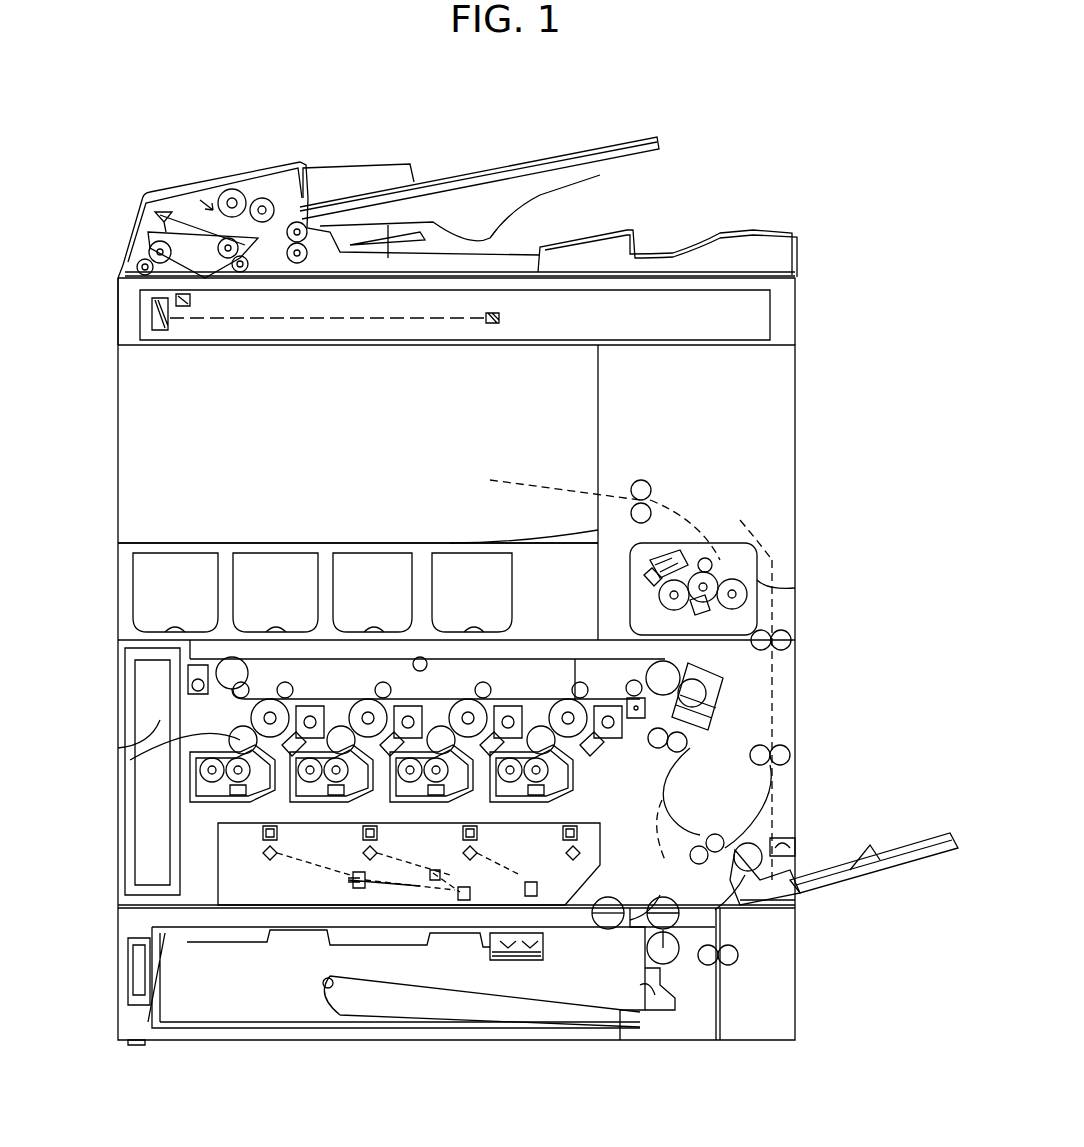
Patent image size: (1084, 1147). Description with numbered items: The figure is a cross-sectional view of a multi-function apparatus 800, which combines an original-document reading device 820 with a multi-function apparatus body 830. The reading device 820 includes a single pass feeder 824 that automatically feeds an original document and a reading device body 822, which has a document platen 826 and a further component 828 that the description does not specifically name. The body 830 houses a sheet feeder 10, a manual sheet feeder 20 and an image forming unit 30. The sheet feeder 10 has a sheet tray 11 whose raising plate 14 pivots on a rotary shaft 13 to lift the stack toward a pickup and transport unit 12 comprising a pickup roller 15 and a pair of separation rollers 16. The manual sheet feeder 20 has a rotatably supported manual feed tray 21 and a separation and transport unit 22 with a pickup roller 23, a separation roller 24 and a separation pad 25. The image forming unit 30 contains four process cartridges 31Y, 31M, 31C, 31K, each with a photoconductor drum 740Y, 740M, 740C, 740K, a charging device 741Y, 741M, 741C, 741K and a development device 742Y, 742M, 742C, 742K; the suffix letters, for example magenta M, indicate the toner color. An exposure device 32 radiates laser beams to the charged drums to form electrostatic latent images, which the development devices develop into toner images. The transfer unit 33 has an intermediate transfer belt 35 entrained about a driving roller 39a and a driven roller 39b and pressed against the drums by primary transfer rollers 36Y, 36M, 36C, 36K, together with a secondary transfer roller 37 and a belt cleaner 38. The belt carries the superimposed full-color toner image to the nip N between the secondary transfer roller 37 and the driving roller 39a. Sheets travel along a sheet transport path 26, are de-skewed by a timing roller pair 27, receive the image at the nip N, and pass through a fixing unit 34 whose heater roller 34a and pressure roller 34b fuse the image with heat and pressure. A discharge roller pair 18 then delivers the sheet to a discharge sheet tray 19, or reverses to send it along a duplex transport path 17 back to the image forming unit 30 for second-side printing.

The multi-function apparatus 800 is at (795, 205).
The sheet feeder 10 is at (830, 975).
The sheet tray 11 is at (655, 1023).
The pickup and transport unit 12 is at (688, 968).
The rotary shaft 13 is at (325, 990).
The raising plate 14 is at (528, 960).
The pickup roller 15 is at (612, 900).
The pair of separation rollers 16 is at (665, 900).
The duplex transport path 17 is at (790, 540).
The discharge roller pair 18 is at (645, 480).
The discharge sheet tray 19 is at (313, 542).
The manual sheet feeder 20 is at (870, 762).
The manual feed tray 21 is at (898, 838).
The separation and transport unit 22 is at (810, 851).
The pickup roller 23 is at (812, 840).
The separation roller 24 is at (790, 812).
The separation pad 25 is at (775, 900).
The sheet transport path 26 is at (668, 805).
The timing roller pair 27 is at (686, 752).
The image forming unit 30 is at (160, 718).
The process cartridge 31Y is at (330, 879).
The process cartridge 31M is at (372, 830).
The process cartridge 31C is at (455, 830).
The process cartridge 31K is at (550, 830).
The exposure device 32 is at (218, 862).
The transfer unit 33 is at (540, 660).
The fixing unit 34 is at (760, 563).
The heater roller 34a is at (715, 580).
The pressure roller 34b is at (747, 594).
The intermediate transfer belt 35 is at (575, 659).
The primary transfer roller 36Y is at (285, 682).
The primary transfer roller 36M is at (383, 682).
The primary transfer roller 36C is at (483, 682).
The primary transfer roller 36K is at (672, 744).
The secondary transfer roller 37 is at (706, 693).
The belt cleaner 38 is at (195, 665).
The driving roller 39a is at (678, 672).
The driven roller 39b is at (236, 660).
The photoconductor drum 740Y is at (243, 726).
The photoconductor drum 740M is at (368, 699).
The photoconductor drum 740C is at (468, 699).
The photoconductor drum 740K is at (568, 699).
The charging device 741Y is at (306, 850).
The charging device 741M is at (406, 850).
The charging device 741C is at (502, 850).
The charging device 741K is at (578, 845).
The development device 742Y is at (258, 800).
The development device 742M is at (358, 800).
The development device 742C is at (458, 800).
The development device 742K is at (556, 800).
The original-document reading device 820 is at (797, 318).
The reading device body 822 is at (118, 300).
The single pass feeder 824 is at (250, 160).
The document platen 826 is at (540, 248).
The reading carriage 828 is at (493, 325).
The multi-function apparatus body 830 is at (797, 397).
The magenta M is at (458, 125).
The nip N is at (672, 604).